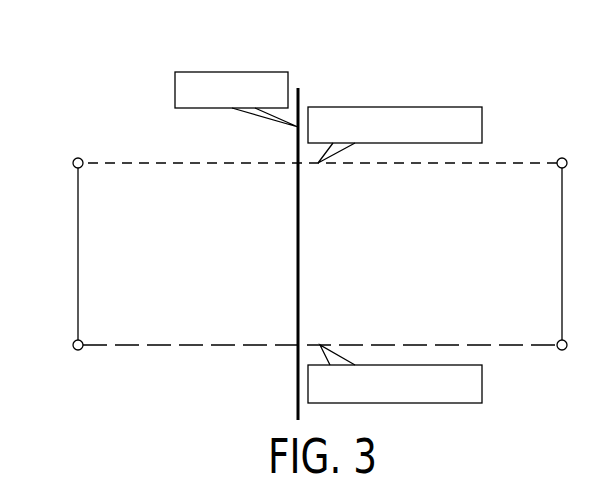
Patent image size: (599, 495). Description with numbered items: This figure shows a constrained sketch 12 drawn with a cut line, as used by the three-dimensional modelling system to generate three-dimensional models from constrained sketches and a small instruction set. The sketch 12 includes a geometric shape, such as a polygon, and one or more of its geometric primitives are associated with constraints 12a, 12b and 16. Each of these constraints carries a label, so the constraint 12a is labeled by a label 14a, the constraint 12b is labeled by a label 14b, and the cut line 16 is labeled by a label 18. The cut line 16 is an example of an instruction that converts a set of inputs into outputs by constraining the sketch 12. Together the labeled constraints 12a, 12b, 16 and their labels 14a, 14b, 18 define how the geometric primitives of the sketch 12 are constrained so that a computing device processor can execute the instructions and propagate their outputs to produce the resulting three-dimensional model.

The constrained sketch 12 is at (55, 130).
The constraint 12a is at (142, 160).
The constraint 12b is at (200, 346).
The label 14a is at (482, 122).
The label 14b is at (482, 385).
The cut line 16 is at (298, 255).
The label 18 is at (230, 72).